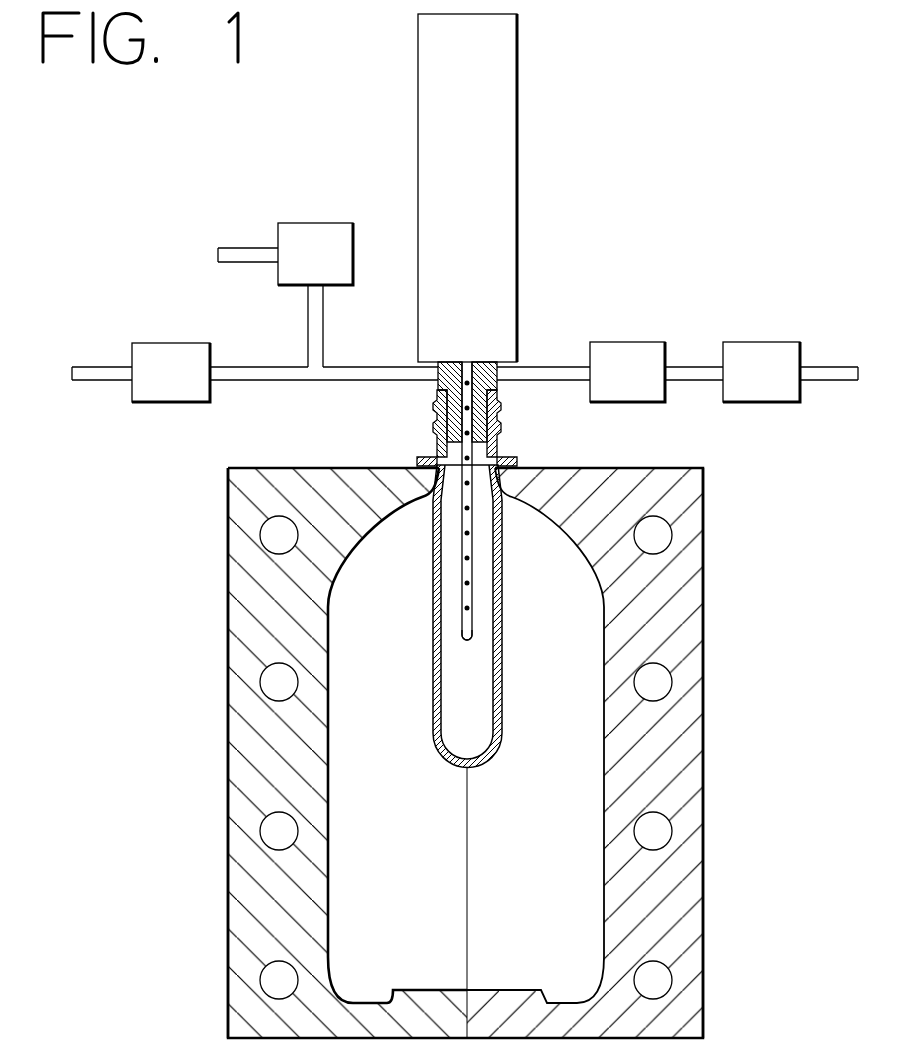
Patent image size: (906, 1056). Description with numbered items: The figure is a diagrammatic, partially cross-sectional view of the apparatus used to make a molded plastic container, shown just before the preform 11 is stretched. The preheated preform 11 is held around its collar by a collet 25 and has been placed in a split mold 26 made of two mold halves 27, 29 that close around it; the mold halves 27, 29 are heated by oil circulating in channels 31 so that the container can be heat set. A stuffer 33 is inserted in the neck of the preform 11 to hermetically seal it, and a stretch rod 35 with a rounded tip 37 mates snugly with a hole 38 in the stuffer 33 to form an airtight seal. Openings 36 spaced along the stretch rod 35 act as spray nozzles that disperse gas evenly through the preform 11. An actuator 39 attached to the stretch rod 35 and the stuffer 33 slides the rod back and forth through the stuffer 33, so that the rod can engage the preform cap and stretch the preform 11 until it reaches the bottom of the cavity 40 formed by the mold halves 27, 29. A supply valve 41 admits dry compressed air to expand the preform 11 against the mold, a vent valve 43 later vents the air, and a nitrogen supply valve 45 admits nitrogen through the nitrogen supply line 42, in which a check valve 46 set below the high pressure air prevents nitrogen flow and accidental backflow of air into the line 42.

The preform 11 is at (437, 668).
The collet 25 is at (418, 457).
The split mold 26 is at (228, 627).
The mold half 27 is at (228, 745).
The mold half 29 is at (698, 754).
The channels 31 is at (663, 680).
The stuffer 33 is at (499, 392).
The stretch rod 35 is at (459, 505).
The openings 36 is at (464, 585).
The rounded tip 37 is at (470, 630).
The hole 38 is at (462, 424).
The actuator 39 is at (517, 173).
The cavity 40 is at (554, 885).
The supply valve 41 is at (160, 343).
The nitrogen supply line 42 is at (553, 367).
The vent valve 43 is at (316, 223).
The nitrogen supply valve 45 is at (758, 342).
The check valve 46 is at (623, 342).